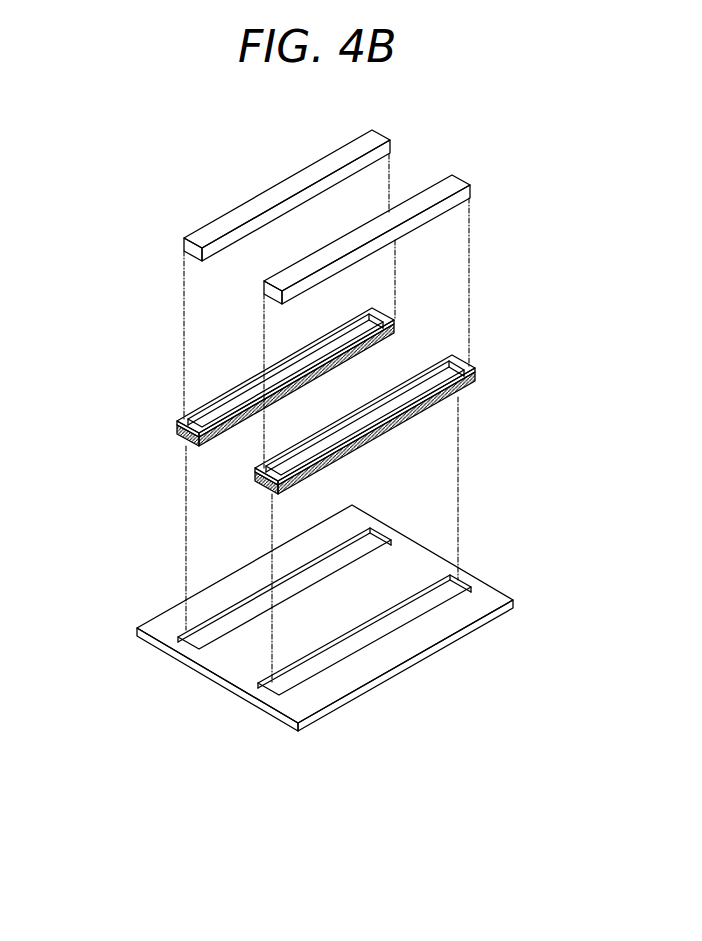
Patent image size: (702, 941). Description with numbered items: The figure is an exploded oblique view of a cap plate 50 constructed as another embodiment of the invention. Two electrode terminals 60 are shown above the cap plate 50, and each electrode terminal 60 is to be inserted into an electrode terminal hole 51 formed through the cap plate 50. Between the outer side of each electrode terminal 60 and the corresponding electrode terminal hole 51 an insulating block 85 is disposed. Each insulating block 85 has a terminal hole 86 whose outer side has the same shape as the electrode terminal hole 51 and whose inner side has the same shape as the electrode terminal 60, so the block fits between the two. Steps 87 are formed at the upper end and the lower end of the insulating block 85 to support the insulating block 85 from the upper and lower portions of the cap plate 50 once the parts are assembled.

The electrode terminal 60 is at (465, 166).
The insulating block 85 is at (317, 404).
The terminal hole 86 is at (249, 395).
The step 87 is at (177, 422).
The cap plate 50 is at (305, 633).
The electrode terminal hole 51 is at (233, 631).